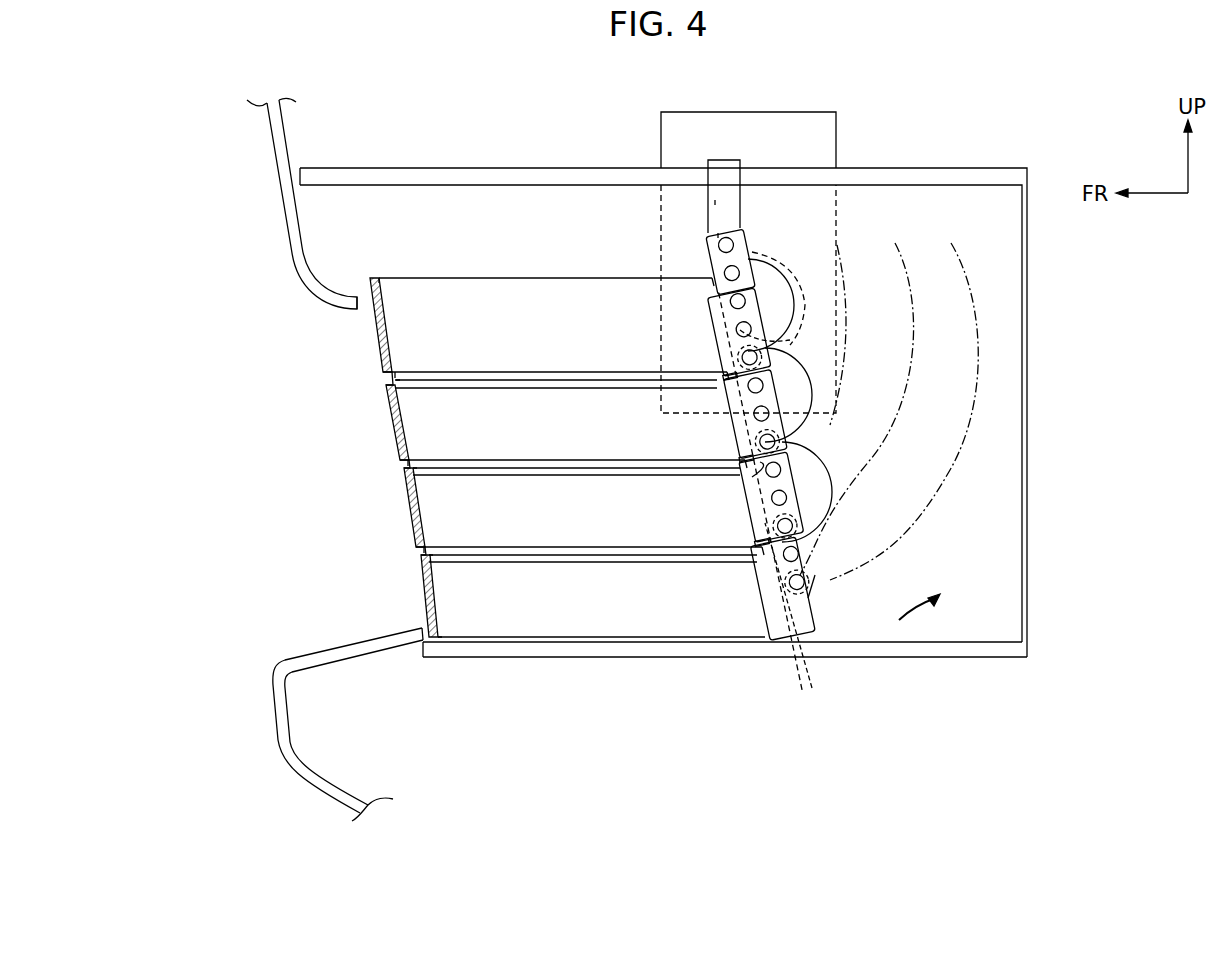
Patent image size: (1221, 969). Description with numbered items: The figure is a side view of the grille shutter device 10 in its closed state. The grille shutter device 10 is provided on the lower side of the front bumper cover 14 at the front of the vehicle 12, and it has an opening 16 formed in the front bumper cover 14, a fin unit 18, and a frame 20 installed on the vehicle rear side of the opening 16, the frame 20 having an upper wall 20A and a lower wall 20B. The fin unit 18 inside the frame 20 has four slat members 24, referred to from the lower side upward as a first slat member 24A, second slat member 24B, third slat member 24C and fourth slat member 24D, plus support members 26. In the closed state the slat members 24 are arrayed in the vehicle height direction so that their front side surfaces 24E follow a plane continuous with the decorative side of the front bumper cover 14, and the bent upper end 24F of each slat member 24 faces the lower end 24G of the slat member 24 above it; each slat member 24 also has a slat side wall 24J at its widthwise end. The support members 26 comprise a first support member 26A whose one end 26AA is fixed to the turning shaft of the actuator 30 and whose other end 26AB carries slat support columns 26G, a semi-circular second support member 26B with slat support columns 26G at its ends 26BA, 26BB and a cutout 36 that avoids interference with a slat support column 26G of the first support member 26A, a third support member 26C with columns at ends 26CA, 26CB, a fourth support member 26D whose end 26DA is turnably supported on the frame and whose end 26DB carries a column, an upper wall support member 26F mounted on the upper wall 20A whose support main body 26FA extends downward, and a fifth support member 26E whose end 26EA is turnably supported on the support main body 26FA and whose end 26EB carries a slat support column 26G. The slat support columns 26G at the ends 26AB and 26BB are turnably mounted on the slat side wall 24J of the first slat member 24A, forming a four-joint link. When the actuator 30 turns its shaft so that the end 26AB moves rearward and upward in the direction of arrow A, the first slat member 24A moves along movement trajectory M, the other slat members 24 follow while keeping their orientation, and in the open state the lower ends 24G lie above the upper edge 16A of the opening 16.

The grille shutter device 10 is at (257, 328).
The vehicle 12 is at (181, 143).
The front bumper cover 14 is at (277, 183).
The opening 16 is at (380, 628).
The upper edge of the opening 16A is at (355, 313).
The fin unit 18 is at (310, 486).
The frame 20 is at (663, 416).
The upper wall 20A is at (537, 175).
The lower wall 20B is at (658, 655).
The slat member 24 is at (521, 469).
The first slat member 24A is at (425, 595).
The second slat member 24B is at (410, 522).
The third slat member 24C is at (395, 440).
The fourth slat member 24D is at (380, 368).
The side surface 24E is at (386, 420).
The upper end 24F is at (378, 278).
The lower end 24G is at (396, 382).
The slat side wall 24J is at (716, 376).
The support member 26 is at (798, 424).
The first support member 26A is at (782, 588).
The one end of the first support member 26AA is at (740, 330).
The other end of the first support member 26AB is at (808, 598).
The second support member 26B is at (771, 499).
The end of the second support member 26BA is at (760, 462).
The end of the second support member 26BB is at (805, 617).
The third support member 26C is at (755, 416).
The end of the third support member 26CA is at (905, 360).
The end of the third support member 26CB is at (850, 470).
The fourth support member 26D is at (739, 334).
The one end of the fourth support member 26DA is at (768, 240).
The other end of the fourth support member 26DB is at (800, 395).
The fifth support member 26E is at (813, 230).
The one end of the fifth support member 26EA is at (718, 233).
The other end of the fifth support member 26EB is at (825, 240).
The upper wall support member 26F is at (742, 160).
The support main body 26FA is at (715, 200).
The slat support column 26G is at (762, 415).
The actuator 30 is at (836, 146).
The cutout 36 is at (700, 393).
The movement trajectory M is at (880, 548).
The arrow A is at (910, 622).